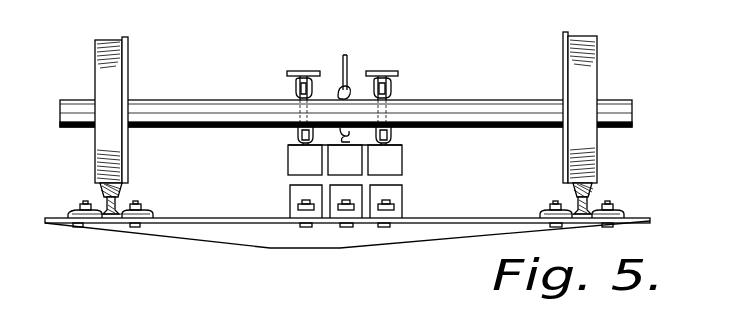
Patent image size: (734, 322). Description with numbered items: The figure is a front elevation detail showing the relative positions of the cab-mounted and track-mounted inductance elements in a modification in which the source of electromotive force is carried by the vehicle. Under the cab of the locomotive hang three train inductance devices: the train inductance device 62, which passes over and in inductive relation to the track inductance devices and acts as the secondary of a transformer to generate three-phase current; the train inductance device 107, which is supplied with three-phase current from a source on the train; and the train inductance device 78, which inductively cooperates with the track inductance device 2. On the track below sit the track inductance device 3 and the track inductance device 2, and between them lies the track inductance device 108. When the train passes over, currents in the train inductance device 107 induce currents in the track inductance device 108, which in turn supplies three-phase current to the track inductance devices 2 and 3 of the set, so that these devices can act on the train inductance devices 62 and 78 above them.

The train inductance device 62 is at (300, 155).
The train inductance device 107 is at (348, 158).
The train inductance device 78 is at (392, 168).
The track inductance device 3 is at (302, 191).
The track inductance device 2 is at (395, 195).
The track inductance device 108 is at (352, 197).